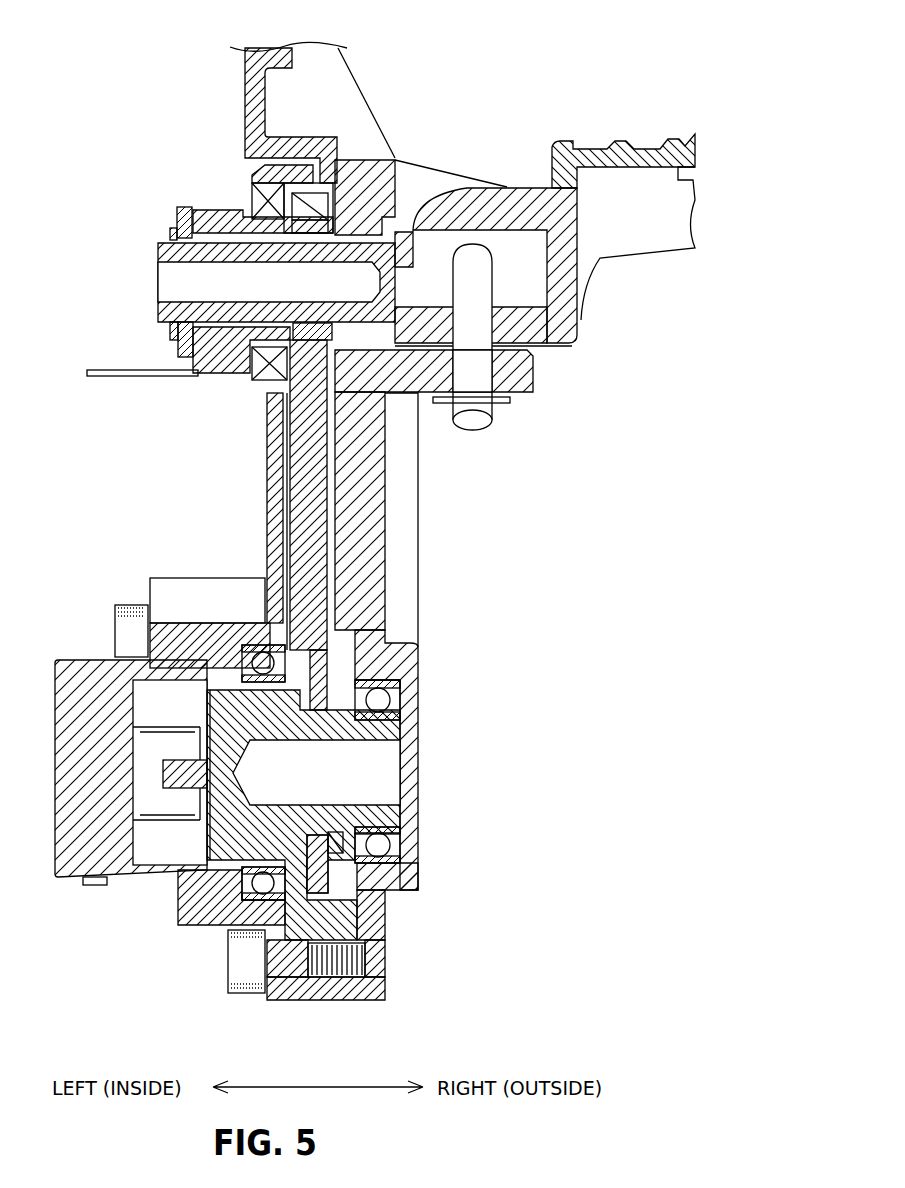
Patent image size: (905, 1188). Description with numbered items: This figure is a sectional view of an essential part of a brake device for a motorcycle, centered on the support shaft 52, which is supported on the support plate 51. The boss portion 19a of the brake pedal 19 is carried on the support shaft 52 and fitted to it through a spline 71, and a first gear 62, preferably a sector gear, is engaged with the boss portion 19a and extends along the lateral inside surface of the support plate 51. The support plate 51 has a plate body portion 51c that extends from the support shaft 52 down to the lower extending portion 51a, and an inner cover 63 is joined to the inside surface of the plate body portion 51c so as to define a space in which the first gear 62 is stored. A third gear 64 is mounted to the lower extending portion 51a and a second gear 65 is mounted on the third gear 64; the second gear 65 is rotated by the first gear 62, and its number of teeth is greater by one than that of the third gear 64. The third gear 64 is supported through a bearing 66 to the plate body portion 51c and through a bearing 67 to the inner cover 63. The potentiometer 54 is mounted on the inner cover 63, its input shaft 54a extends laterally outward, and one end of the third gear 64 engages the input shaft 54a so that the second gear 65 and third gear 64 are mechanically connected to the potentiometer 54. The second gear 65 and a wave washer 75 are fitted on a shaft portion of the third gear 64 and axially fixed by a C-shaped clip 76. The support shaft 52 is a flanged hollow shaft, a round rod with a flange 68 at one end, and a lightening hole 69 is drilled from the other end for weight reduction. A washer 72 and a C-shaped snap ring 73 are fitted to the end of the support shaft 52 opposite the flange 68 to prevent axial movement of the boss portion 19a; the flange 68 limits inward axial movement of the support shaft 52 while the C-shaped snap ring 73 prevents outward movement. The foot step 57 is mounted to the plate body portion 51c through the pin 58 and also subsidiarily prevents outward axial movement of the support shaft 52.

The brake pedal 19 is at (222, 212).
The boss portion 19a is at (254, 382).
The support plate 51 is at (420, 518).
The lower extending portion 51a is at (356, 1000).
The plate body portion 51c is at (370, 568).
The support shaft 52 is at (158, 250).
The potentiometer 54 is at (102, 880).
The input shaft 54a is at (158, 727).
The foot step 57 is at (674, 133).
The pin 58 is at (472, 428).
The first gear 62 is at (305, 535).
The inner cover 63 is at (267, 486).
The third gear 64 is at (300, 905).
The second gear 65 is at (365, 672).
The bearing 66 is at (400, 855).
The bearing 67 is at (236, 900).
The flange 68 is at (412, 212).
The lightening hole 69 is at (200, 292).
The spline 71 is at (236, 362).
The washer 72 is at (192, 216).
The C-shaped snap ring 73 is at (176, 233).
The wave washer 75 is at (387, 927).
The C-shaped clip 76 is at (375, 888).